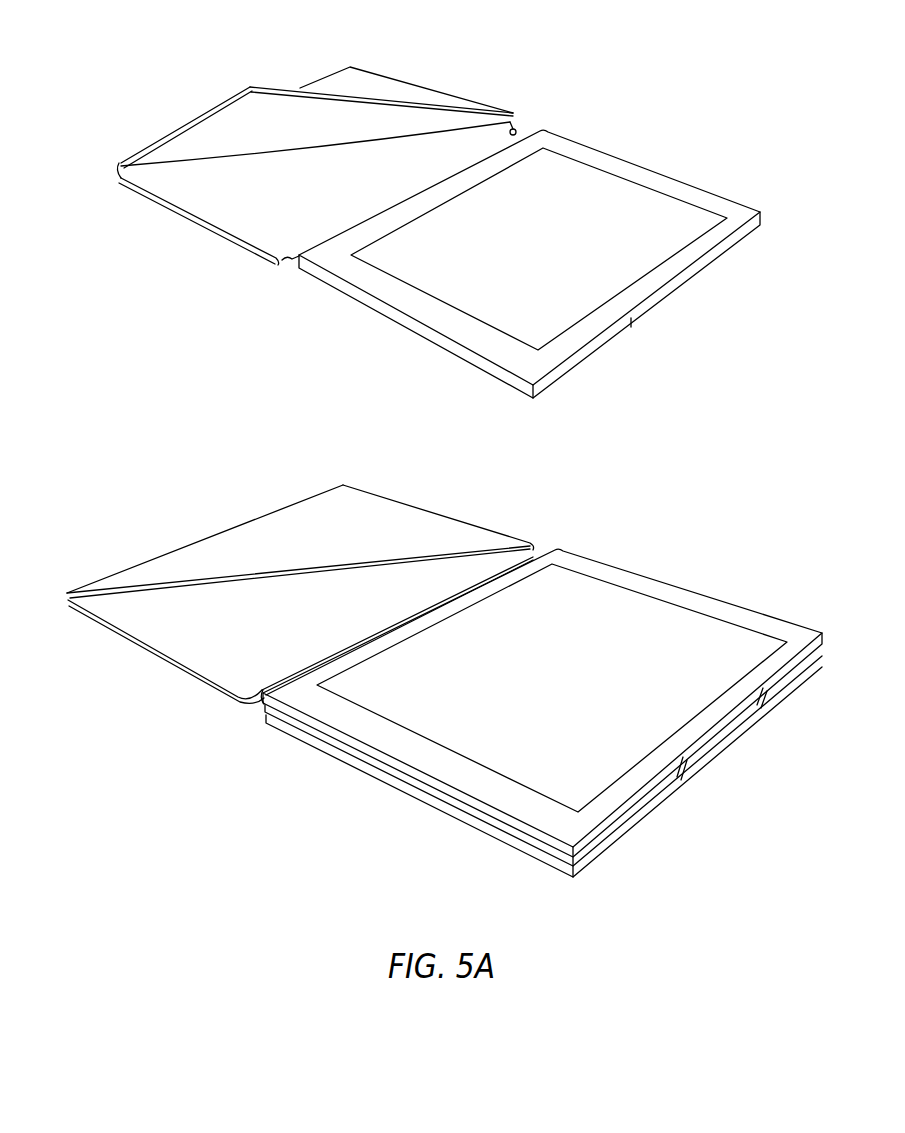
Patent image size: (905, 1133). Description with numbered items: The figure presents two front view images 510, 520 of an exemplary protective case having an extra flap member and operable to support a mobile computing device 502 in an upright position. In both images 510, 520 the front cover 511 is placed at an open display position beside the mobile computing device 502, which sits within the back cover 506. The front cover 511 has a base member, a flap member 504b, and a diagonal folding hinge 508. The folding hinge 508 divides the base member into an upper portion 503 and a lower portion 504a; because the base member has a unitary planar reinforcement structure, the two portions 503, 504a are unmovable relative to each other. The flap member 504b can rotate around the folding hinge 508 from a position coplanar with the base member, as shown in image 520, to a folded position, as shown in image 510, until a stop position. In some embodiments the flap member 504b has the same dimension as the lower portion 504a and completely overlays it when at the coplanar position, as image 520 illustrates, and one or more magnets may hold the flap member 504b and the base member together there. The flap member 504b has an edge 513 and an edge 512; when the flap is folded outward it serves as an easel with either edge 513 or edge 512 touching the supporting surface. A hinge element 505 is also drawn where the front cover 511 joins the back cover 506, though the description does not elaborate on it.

The mobile computing device 502 is at (703, 200).
The upper portion 503 is at (373, 187).
The lower portion 504a is at (360, 80).
The flap member 504b is at (270, 137).
The hinge 505 is at (514, 129).
The back cover 506 is at (422, 333).
The diagonal folding hinge 508 is at (125, 176).
The front view image 510 is at (634, 101).
The front cover 511 is at (237, 212).
The edge 512 is at (280, 88).
The edge 513 is at (197, 117).
The front view image 520 is at (689, 256).